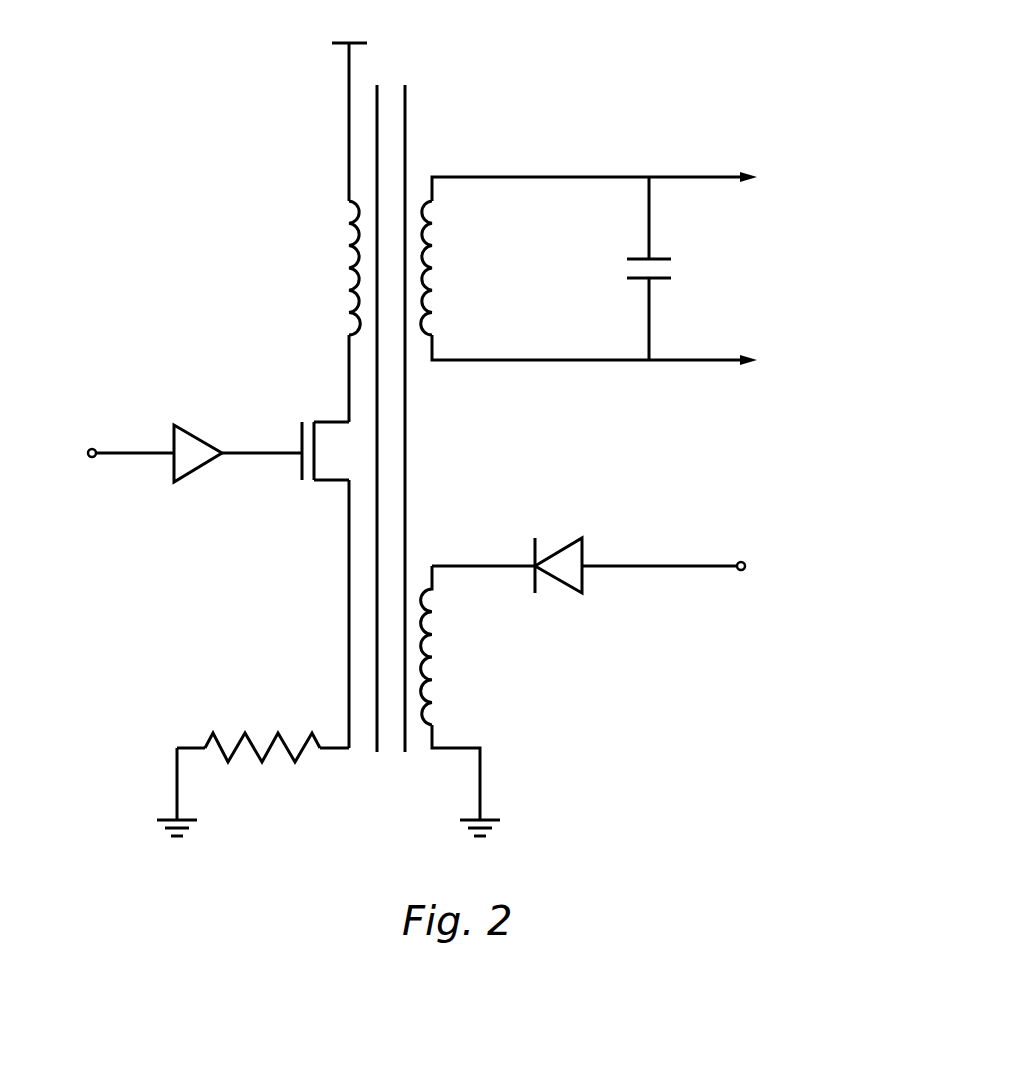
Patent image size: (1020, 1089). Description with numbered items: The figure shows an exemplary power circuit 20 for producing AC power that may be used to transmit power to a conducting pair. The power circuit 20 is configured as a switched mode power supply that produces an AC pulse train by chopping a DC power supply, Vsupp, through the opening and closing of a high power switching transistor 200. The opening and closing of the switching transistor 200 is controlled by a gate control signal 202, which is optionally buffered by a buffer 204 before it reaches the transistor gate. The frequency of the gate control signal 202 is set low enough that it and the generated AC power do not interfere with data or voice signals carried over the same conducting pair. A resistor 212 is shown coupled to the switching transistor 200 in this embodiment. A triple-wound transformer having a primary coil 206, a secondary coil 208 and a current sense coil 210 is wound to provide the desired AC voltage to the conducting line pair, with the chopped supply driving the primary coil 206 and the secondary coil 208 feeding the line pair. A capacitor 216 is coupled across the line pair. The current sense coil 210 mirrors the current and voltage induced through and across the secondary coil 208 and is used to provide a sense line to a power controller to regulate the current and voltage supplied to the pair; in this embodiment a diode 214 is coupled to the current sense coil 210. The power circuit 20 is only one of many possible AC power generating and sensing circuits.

The power circuit 20 is at (780, 750).
The switching transistor 200 is at (290, 488).
The gate control signal 202 is at (101, 470).
The buffer 204 is at (204, 425).
The primary coil 206 is at (313, 277).
The secondary coil 208 is at (455, 277).
The current sense coil 210 is at (455, 666).
The resistor 212 is at (302, 773).
The diode 214 is at (562, 535).
The capacitor 216 is at (671, 244).